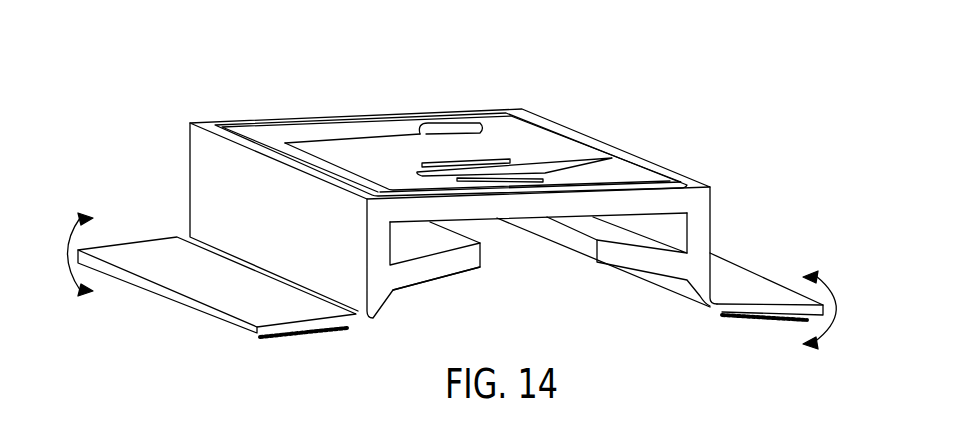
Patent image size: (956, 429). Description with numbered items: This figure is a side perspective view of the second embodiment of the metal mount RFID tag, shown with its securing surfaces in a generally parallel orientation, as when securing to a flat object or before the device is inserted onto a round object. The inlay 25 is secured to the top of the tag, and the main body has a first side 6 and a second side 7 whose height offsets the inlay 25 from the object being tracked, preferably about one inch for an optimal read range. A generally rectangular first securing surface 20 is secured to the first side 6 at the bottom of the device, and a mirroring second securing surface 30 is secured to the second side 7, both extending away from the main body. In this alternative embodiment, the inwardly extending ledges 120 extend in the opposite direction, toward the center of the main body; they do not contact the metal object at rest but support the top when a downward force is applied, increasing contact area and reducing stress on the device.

The first side 6 is at (208, 167).
The second side 7 is at (712, 217).
The first securing surface 20 is at (140, 252).
The inlay 25 is at (535, 150).
The second securing surface 30 is at (750, 287).
The inwardly extending ledges 120 is at (425, 267).